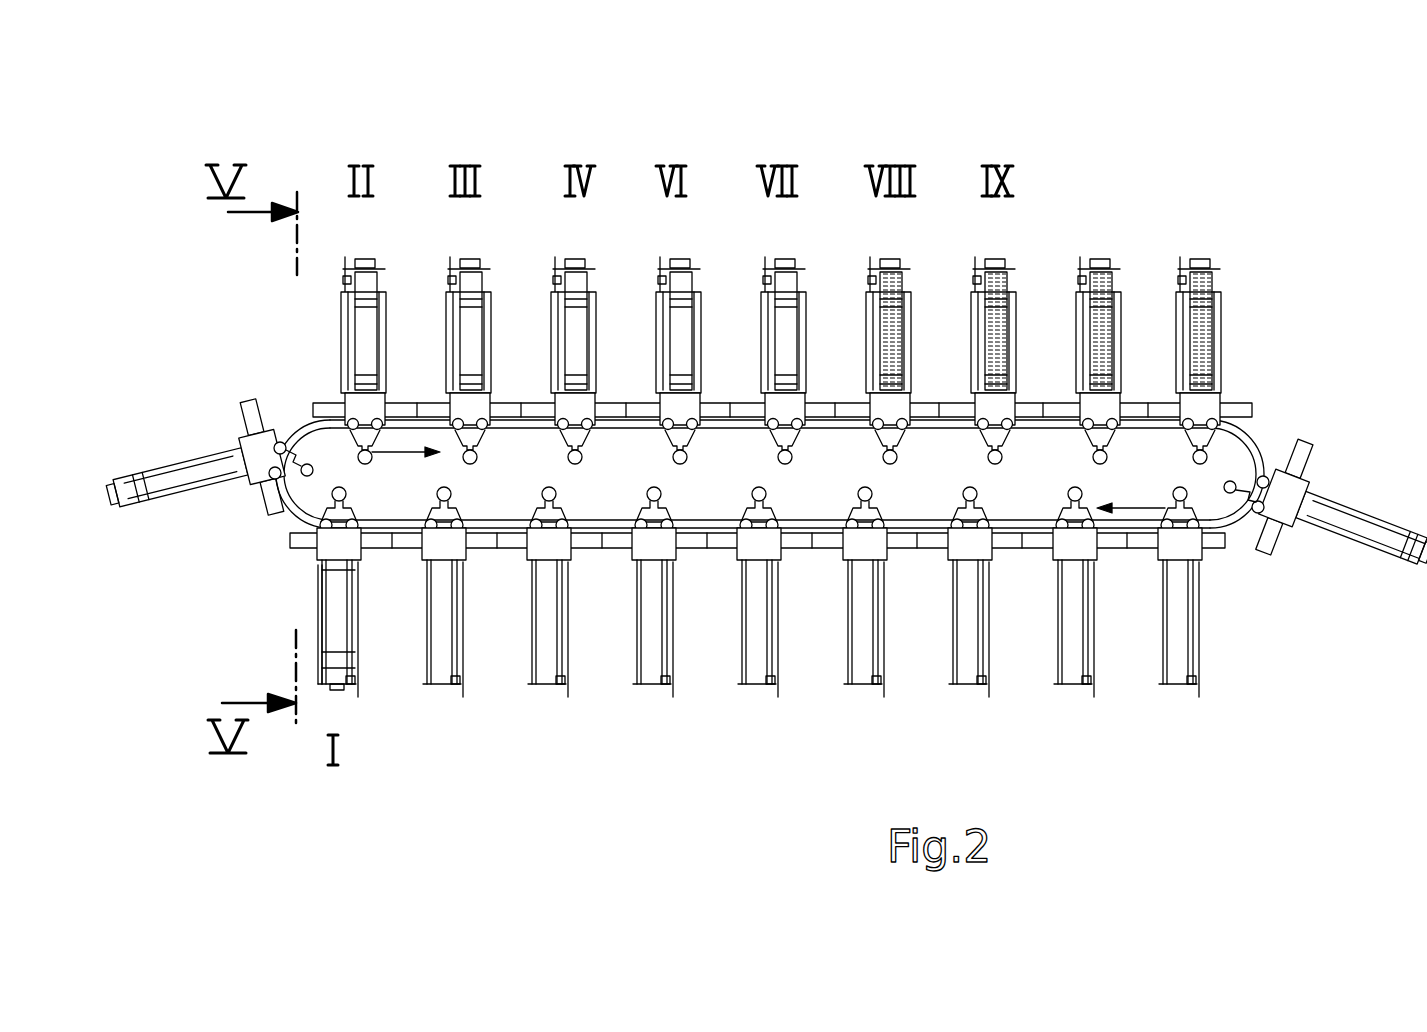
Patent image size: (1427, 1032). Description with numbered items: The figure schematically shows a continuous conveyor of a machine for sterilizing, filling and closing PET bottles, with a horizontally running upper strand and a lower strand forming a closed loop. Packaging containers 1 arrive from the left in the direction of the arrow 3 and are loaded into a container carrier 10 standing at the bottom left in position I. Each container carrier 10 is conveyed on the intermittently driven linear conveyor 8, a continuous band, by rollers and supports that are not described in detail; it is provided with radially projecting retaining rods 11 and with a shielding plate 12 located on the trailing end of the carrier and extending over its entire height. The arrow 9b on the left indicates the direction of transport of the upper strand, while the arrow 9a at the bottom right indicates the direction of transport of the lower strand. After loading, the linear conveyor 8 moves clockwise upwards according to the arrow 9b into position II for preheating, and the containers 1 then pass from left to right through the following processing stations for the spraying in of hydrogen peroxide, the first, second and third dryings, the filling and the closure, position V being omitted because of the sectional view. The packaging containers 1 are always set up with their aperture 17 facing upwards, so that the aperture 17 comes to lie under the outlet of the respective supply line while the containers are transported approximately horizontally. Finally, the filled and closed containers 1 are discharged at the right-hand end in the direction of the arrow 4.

The packaging container 1 is at (1222, 327).
The arrow 3 is at (288, 593).
The arrow 4 is at (1302, 357).
The linear conveyor 8 is at (710, 570).
The arrow 9a is at (1228, 553).
The arrow 9b is at (317, 457).
The container carrier 10 is at (540, 650).
The retaining rods 11 is at (950, 660).
The shielding plate 12 is at (1097, 635).
The aperture 17 is at (583, 270).